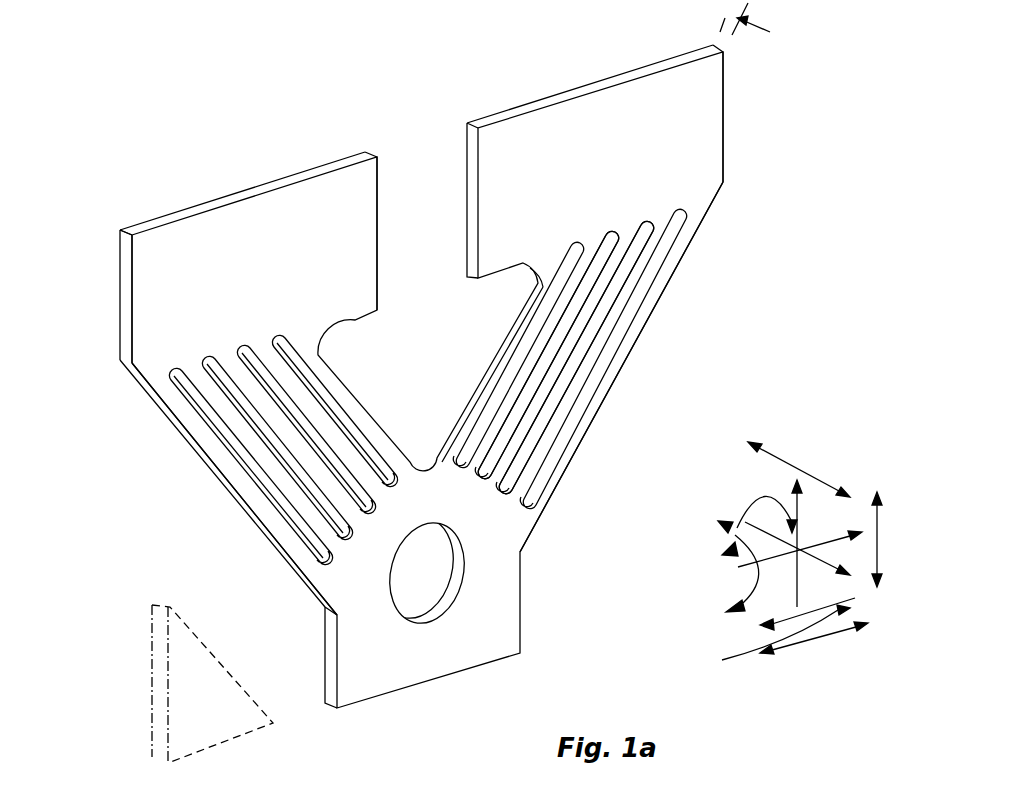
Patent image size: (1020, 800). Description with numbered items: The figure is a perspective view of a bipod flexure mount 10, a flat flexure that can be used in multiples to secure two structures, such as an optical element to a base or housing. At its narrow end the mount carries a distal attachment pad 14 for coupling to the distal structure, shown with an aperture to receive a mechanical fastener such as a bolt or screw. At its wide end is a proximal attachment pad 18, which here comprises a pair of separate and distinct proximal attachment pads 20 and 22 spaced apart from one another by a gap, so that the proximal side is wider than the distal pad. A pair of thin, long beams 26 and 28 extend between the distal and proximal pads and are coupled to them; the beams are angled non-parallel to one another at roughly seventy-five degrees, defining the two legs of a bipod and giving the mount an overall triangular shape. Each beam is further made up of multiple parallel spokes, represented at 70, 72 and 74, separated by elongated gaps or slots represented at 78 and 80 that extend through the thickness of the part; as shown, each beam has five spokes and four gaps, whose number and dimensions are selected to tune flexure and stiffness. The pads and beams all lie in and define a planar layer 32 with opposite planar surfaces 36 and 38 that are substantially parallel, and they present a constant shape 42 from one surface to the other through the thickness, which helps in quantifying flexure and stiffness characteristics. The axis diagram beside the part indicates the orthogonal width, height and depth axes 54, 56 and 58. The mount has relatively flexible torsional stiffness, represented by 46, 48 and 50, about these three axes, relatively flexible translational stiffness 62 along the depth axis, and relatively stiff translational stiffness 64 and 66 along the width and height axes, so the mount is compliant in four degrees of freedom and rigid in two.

The bipod flexure mount 10 is at (541, 609).
The distal attachment pad 14 is at (410, 663).
The proximal attachment pad 18 is at (158, 278).
The proximal attachment pad 20 is at (222, 237).
The proximal attachment pad 22 is at (558, 130).
The beam 26 is at (222, 476).
The beam 28 is at (660, 300).
The planar layer 32 is at (152, 680).
The planar surface 36 is at (333, 213).
The planar surface 38 is at (300, 172).
The constant shape 42 is at (690, 152).
The torsional stiffness 46 is at (752, 600).
The torsional stiffness 48 is at (779, 644).
The torsional stiffness 50 is at (757, 500).
The width axis 54 is at (779, 558).
The height axis 56 is at (800, 523).
The depth axis 58 is at (805, 562).
The translational stiffness 62 is at (818, 472).
The translational stiffness 64 is at (825, 640).
The translational stiffness 66 is at (878, 537).
The spoke 70 is at (560, 473).
The spoke 72 is at (575, 393).
The spoke 74 is at (575, 330).
The elongated gap 78 is at (563, 437).
The elongated gap 80 is at (575, 362).